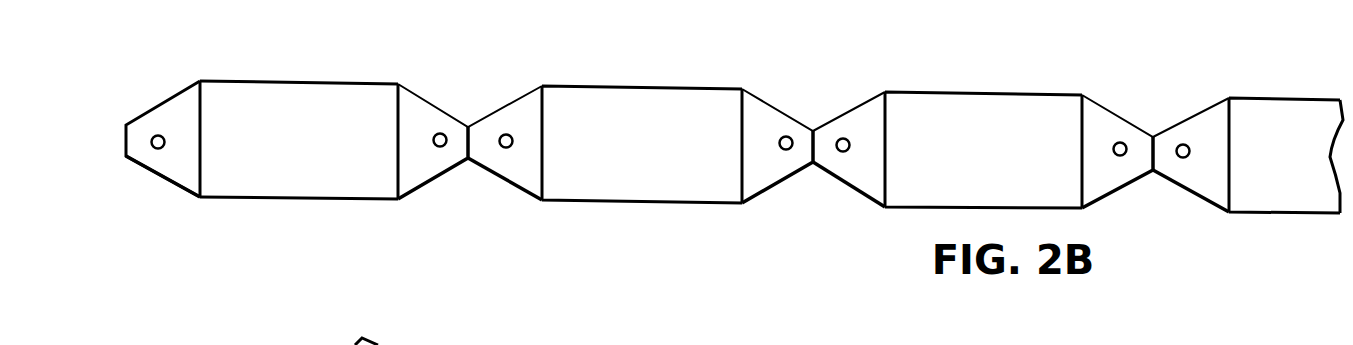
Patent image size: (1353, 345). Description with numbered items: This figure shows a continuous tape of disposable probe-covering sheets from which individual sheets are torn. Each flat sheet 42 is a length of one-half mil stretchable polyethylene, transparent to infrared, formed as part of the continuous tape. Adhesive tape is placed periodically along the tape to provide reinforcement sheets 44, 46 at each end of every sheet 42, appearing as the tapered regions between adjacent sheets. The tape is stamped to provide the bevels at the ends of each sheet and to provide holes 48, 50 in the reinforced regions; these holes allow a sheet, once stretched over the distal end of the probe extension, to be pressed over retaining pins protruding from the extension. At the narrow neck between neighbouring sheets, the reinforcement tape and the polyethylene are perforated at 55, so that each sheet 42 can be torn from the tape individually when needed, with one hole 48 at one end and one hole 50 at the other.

The flat sheet 42 is at (306, 92).
The reinforcement sheet 44 is at (165, 172).
The reinforcement sheet 46 is at (418, 102).
The hole 48 is at (158, 134).
The hole 50 is at (445, 131).
The perforation 55 is at (468, 162).